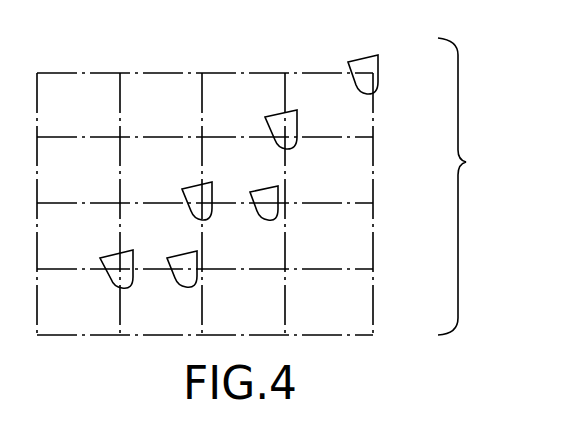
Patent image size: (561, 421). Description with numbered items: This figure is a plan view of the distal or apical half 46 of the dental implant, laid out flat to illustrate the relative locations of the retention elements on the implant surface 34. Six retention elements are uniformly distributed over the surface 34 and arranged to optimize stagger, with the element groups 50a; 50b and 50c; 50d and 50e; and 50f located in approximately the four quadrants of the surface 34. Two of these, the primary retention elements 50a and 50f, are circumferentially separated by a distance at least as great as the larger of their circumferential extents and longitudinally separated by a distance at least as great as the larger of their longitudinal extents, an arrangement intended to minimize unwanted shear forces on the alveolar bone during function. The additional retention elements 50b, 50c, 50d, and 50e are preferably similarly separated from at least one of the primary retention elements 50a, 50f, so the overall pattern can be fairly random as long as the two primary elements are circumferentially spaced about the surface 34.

The implant surface 34 is at (366, 191).
The distal or apical half 46 is at (471, 186).
The primary retention element 50a is at (370, 63).
The additional retention element 50b is at (272, 117).
The additional retention element 50c is at (270, 210).
The additional retention element 50d is at (190, 187).
The additional retention element 50e is at (198, 278).
The primary retention element 50f is at (108, 275).